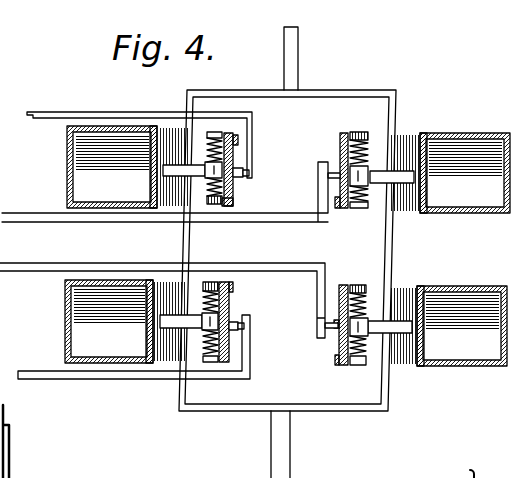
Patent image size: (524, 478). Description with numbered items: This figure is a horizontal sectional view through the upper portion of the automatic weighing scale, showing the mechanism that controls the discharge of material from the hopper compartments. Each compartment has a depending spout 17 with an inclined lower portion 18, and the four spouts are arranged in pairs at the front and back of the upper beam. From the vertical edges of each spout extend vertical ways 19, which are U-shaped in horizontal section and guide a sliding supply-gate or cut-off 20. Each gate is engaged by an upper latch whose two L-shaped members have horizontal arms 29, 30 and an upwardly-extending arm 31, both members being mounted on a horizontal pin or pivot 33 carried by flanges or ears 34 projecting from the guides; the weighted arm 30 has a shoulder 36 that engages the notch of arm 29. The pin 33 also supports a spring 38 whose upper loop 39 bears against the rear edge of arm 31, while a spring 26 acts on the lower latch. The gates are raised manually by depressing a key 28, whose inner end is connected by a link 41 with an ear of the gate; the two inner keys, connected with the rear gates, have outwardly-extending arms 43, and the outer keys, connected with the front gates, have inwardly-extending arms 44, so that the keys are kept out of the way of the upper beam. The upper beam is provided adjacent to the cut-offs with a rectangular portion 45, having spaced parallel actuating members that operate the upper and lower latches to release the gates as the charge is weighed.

The spout 17 is at (67, 186).
The inclined lower portion 18 is at (164, 208).
The vertical ways 19 is at (230, 133).
The supply-gate or cut-off 20 is at (238, 150).
The spring 26 is at (115, 113).
The key 28 is at (88, 263).
The horizontal arm 29 is at (205, 167).
The weighted horizontal arm 30 is at (151, 176).
The upwardly-extending arm 31 is at (205, 176).
The horizontal pin or pivot 33 is at (213, 207).
The flanges or ears 34 is at (213, 132).
The shoulder 36 is at (233, 192).
The spring 38 is at (419, 195).
The upper loop 39 is at (192, 137).
The link 41 is at (317, 175).
The outwardly-extending arm 43 is at (305, 226).
The inwardly-extending arm 44 is at (252, 127).
The rectangular portion 45 is at (369, 413).